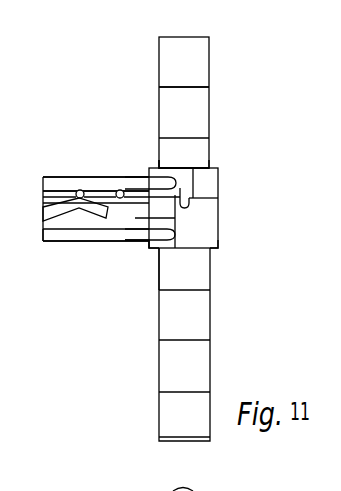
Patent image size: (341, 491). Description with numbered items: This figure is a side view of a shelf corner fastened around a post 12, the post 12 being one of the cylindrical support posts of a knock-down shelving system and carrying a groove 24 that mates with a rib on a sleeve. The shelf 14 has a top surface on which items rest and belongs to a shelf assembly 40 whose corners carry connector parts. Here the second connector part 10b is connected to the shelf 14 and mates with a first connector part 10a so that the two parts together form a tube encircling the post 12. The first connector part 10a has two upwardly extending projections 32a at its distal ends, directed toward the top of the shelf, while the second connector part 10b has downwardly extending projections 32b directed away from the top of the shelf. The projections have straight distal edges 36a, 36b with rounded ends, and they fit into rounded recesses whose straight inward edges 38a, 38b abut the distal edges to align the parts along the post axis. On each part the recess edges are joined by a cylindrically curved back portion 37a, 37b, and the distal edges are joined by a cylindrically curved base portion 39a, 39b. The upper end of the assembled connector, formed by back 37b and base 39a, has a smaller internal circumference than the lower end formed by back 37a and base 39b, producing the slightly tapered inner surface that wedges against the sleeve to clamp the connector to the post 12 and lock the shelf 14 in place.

The first connector part 10a is at (219, 249).
The second connector part 10b is at (153, 250).
The support post 12 is at (209, 67).
The shelf 14 is at (133, 187).
The groove 24 is at (198, 87).
The upwardly extending projection 32a is at (124, 175).
The downwardly extending projection 32b is at (190, 200).
The straight distal edge 36a is at (140, 240).
The straight distal edge 36b is at (192, 182).
The back portion 37a is at (197, 251).
The back portion 37b is at (180, 167).
The straight recess edge 38a is at (172, 177).
The straight recess edge 38b is at (175, 229).
The base portion 39a is at (205, 166).
The base portion 39b is at (162, 252).
The shelf assembly 40 is at (74, 243).